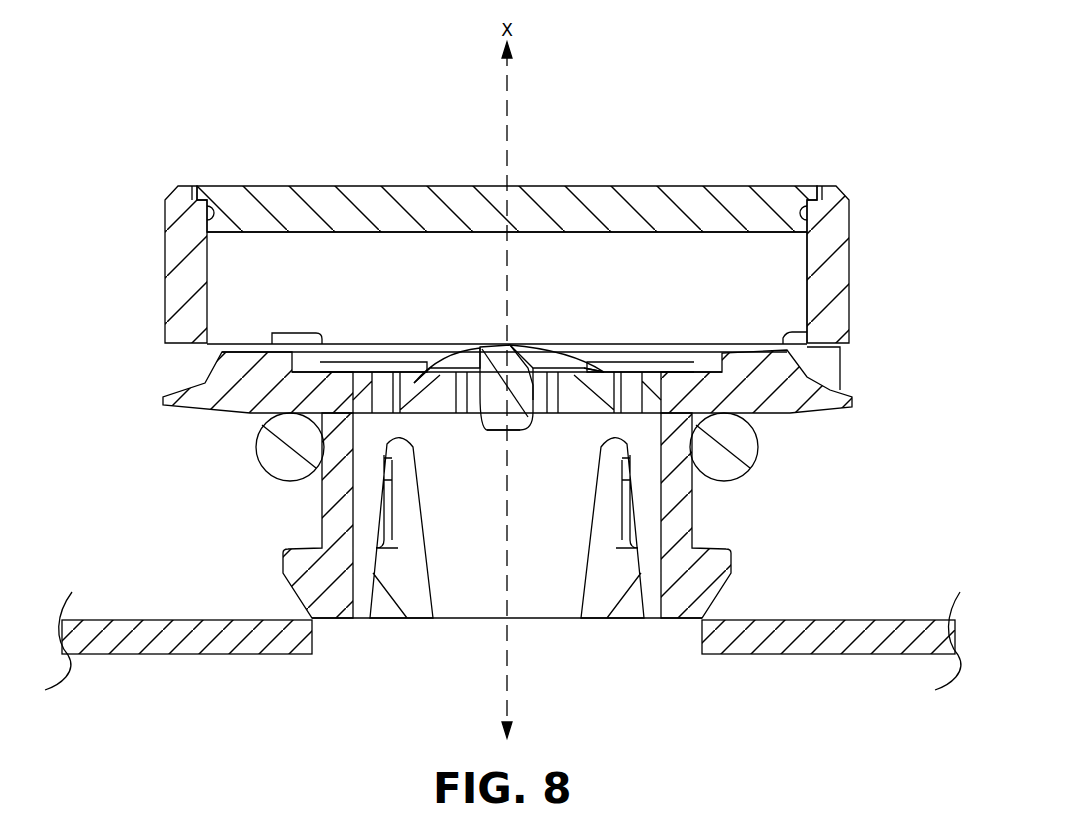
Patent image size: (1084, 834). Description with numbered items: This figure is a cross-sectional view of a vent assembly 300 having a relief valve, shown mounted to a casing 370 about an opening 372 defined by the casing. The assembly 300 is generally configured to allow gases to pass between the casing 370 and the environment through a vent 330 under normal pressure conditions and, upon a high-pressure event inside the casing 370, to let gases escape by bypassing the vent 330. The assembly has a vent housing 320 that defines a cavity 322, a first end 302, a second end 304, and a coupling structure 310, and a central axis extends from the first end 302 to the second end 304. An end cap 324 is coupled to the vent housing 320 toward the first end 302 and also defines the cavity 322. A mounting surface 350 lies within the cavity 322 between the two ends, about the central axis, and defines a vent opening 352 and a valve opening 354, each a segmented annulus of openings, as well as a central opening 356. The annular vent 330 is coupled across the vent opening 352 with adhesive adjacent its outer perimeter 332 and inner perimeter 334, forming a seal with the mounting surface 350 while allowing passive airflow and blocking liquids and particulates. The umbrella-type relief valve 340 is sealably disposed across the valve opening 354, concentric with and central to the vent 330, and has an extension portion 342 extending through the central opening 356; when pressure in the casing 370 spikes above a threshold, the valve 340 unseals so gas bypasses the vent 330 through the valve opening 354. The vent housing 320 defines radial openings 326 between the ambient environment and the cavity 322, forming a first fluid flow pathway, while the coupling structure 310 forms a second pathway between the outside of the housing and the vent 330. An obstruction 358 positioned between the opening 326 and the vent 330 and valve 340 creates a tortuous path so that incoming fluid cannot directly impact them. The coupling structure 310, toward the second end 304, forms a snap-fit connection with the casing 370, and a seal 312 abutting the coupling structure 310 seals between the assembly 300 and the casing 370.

The assembly 300 is at (646, 78).
The first end 302 is at (135, 208).
The second end 304 is at (275, 601).
The coupling structure 310 is at (740, 533).
The seal 312 is at (742, 462).
The vent housing 320 is at (849, 197).
The cavity 322 is at (790, 288).
The end cap 324 is at (696, 186).
The opening 326 is at (222, 325).
The vent 330 is at (682, 344).
The outer perimeter 332 is at (350, 367).
The inner perimeter 334 is at (414, 392).
The relief valve 340 is at (503, 345).
The extension portion 342 is at (483, 393).
The mounting surface 350 is at (603, 352).
The vent opening 352 is at (378, 382).
The valve opening 354 is at (545, 410).
The central opening 356 is at (556, 380).
The obstruction 358 is at (733, 358).
The casing 370 is at (790, 627).
The opening 372 is at (674, 660).